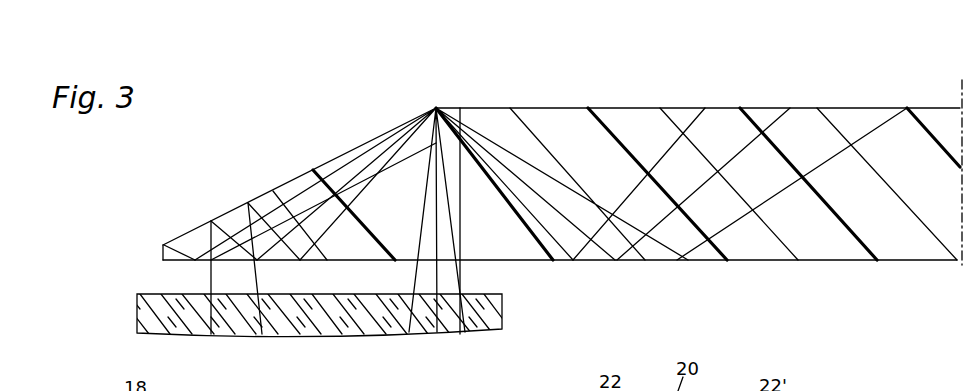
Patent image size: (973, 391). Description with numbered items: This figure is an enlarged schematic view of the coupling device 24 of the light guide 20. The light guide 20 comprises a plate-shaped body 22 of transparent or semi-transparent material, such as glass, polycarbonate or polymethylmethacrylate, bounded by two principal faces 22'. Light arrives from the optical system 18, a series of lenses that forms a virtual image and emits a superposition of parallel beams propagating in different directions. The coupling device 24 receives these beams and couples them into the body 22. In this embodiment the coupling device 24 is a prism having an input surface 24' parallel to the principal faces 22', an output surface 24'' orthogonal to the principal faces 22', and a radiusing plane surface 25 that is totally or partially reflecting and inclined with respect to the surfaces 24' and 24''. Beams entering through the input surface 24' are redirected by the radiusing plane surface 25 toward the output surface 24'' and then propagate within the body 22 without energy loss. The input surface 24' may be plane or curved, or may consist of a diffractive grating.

The optical system 18 is at (130, 321).
The light guide 20 is at (730, 103).
The plate-shaped body 22 is at (696, 159).
The principal faces 22' is at (698, 192).
The coupling device 24 is at (276, 184).
The input surface 24' is at (335, 249).
The output surface 24'' is at (469, 195).
The radiusing plane surface 25 is at (337, 156).